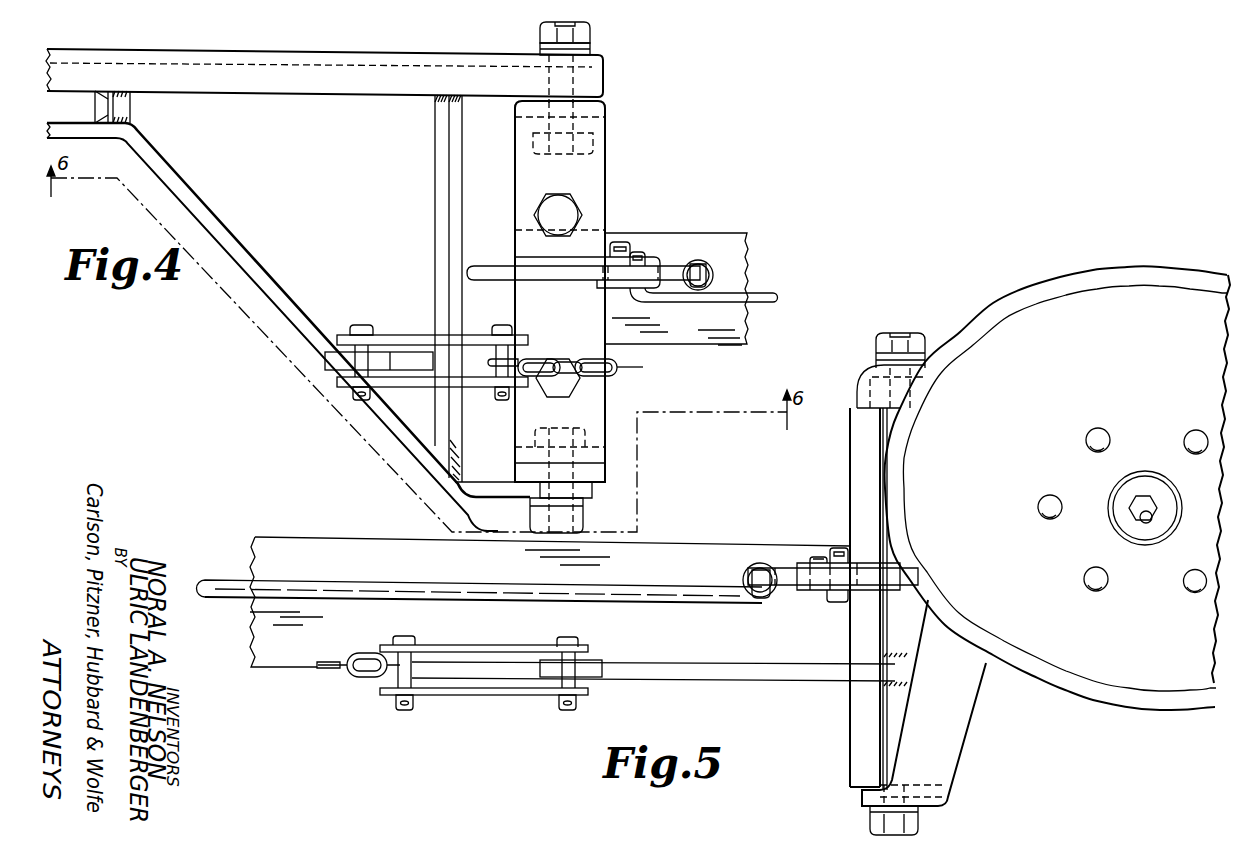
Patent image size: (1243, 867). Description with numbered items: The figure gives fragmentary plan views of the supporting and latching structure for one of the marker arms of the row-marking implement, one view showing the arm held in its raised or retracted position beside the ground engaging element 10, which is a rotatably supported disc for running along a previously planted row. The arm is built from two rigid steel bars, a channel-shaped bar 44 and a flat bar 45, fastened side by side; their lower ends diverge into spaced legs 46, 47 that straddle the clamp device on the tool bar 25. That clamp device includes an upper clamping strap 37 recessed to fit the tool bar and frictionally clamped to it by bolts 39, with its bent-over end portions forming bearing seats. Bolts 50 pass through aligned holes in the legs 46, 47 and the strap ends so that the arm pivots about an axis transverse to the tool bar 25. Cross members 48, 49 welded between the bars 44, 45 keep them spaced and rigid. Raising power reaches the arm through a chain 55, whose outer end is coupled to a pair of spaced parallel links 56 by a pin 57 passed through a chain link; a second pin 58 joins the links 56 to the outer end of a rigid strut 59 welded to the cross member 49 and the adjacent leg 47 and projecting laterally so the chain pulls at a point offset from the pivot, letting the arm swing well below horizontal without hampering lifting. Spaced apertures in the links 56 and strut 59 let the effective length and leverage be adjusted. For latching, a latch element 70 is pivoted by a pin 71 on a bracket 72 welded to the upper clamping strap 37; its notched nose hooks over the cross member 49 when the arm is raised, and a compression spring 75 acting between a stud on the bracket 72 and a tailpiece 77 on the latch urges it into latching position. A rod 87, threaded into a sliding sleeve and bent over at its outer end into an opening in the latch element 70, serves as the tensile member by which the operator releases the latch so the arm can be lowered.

In FIG. 5, the ground engaging element 10 is at (1160, 268).
In FIG. 4, the tool bar 25 is at (712, 238).
In FIG. 5, the tool bar 25 is at (657, 543).
In FIG. 4, the upper clamping strap 37 is at (605, 398).
In FIG. 5, the upper clamping strap 37 is at (850, 447).
In FIG. 4, the bolt 39 is at (557, 198).
In FIG. 4, the bar 44 is at (290, 50).
In FIG. 4, the bar 45 is at (195, 197).
In FIG. 5, the bar 45 is at (963, 710).
In FIG. 5, the leg 46 is at (866, 371).
In FIG. 5, the leg 47 is at (862, 795).
In FIG. 4, the cross member 48 is at (130, 109).
In FIG. 5, the cross member 49 is at (886, 713).
In FIG. 4, the bolt 50 is at (538, 36).
In FIG. 5, the bolt 50 is at (920, 338).
In FIG. 4, the chain 55 is at (643, 367).
In FIG. 4, the link 56 is at (478, 336).
In FIG. 5, the link 56 is at (493, 645).
In FIG. 4, the pin 57 is at (503, 401).
In FIG. 5, the pin 57 is at (385, 680).
In FIG. 5, the pin 58 is at (575, 683).
In FIG. 4, the strut 59 is at (337, 360).
In FIG. 5, the strut 59 is at (763, 676).
In FIG. 4, the latch element 70 is at (497, 266).
In FIG. 5, the latch element 70 is at (790, 567).
In FIG. 4, the pin 71 is at (626, 240).
In FIG. 5, the pin 71 is at (834, 603).
In FIG. 4, the bracket 72 is at (592, 256).
In FIG. 5, the bracket 72 is at (867, 562).
In FIG. 4, the compression spring 75 is at (706, 262).
In FIG. 5, the compression spring 75 is at (762, 562).
In FIG. 4, the tailpiece 77 is at (708, 275).
In FIG. 5, the tailpiece 77 is at (767, 586).
In FIG. 4, the rod 87 is at (776, 300).
In FIG. 5, the rod 87 is at (375, 586).